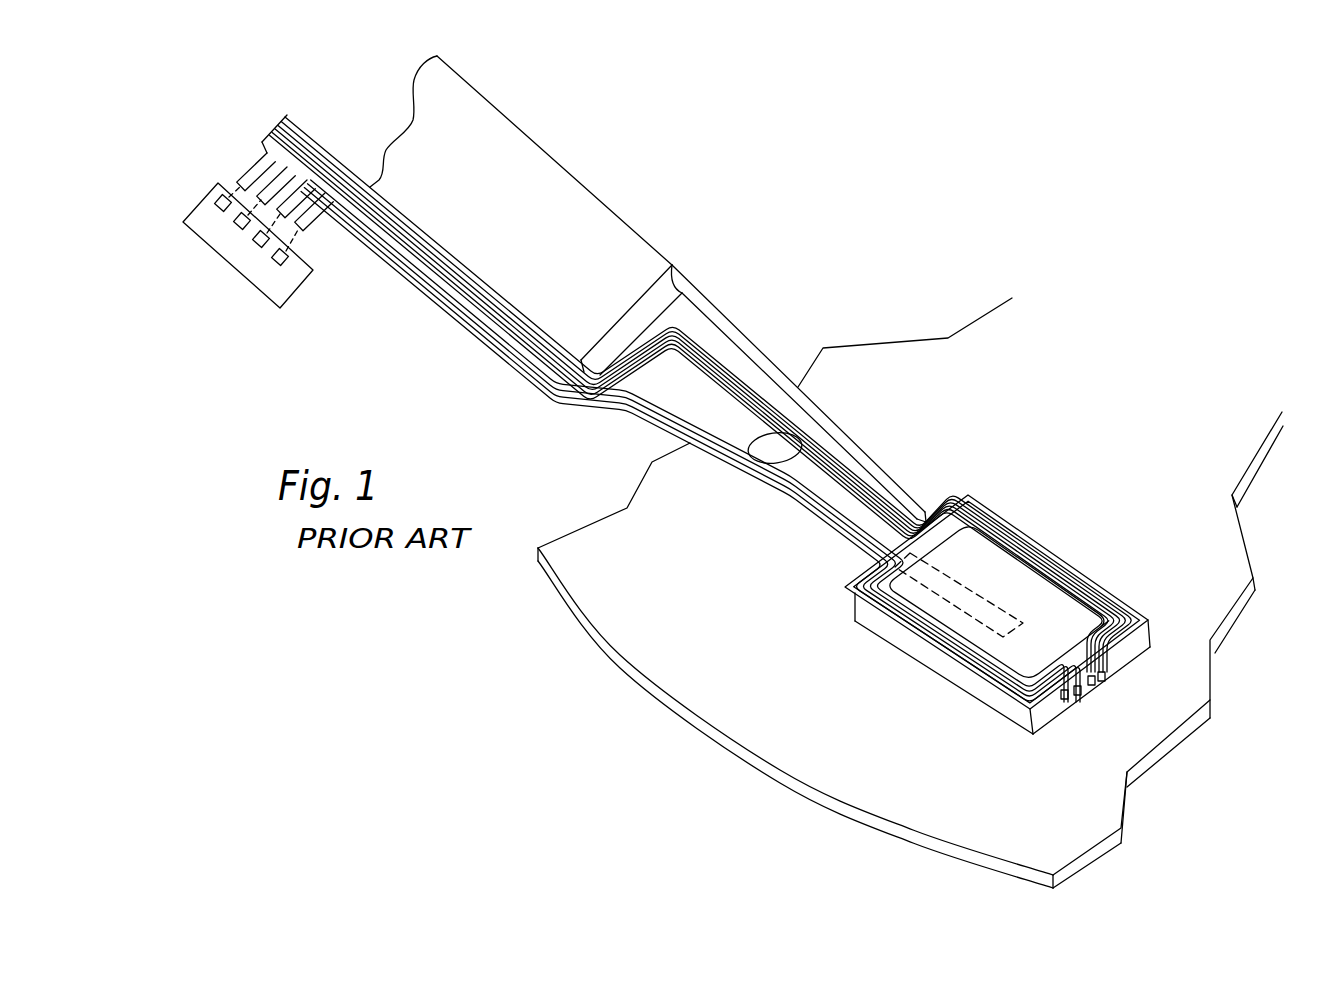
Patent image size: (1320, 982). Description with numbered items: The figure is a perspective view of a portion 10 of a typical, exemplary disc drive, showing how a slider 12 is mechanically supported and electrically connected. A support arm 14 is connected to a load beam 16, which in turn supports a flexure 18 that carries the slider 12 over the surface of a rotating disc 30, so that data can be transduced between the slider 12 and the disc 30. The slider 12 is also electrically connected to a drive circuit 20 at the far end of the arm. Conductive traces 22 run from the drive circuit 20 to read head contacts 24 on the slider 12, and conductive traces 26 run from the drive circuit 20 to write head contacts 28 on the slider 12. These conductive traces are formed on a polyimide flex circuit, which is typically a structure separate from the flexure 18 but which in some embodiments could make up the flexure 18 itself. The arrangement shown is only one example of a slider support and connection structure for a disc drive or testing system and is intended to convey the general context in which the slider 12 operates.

The portion of a disc drive 10 is at (641, 534).
The slider 12 is at (1128, 652).
The support arm 14 is at (587, 240).
The load beam 16 is at (732, 323).
The flexure 18 is at (956, 496).
The drive circuit 20 is at (285, 283).
The conductive traces 22 is at (586, 398).
The read head contacts 24 is at (1080, 702).
The conductive traces 26 is at (858, 480).
The write head contacts 28 is at (1108, 686).
The disc 30 is at (702, 700).